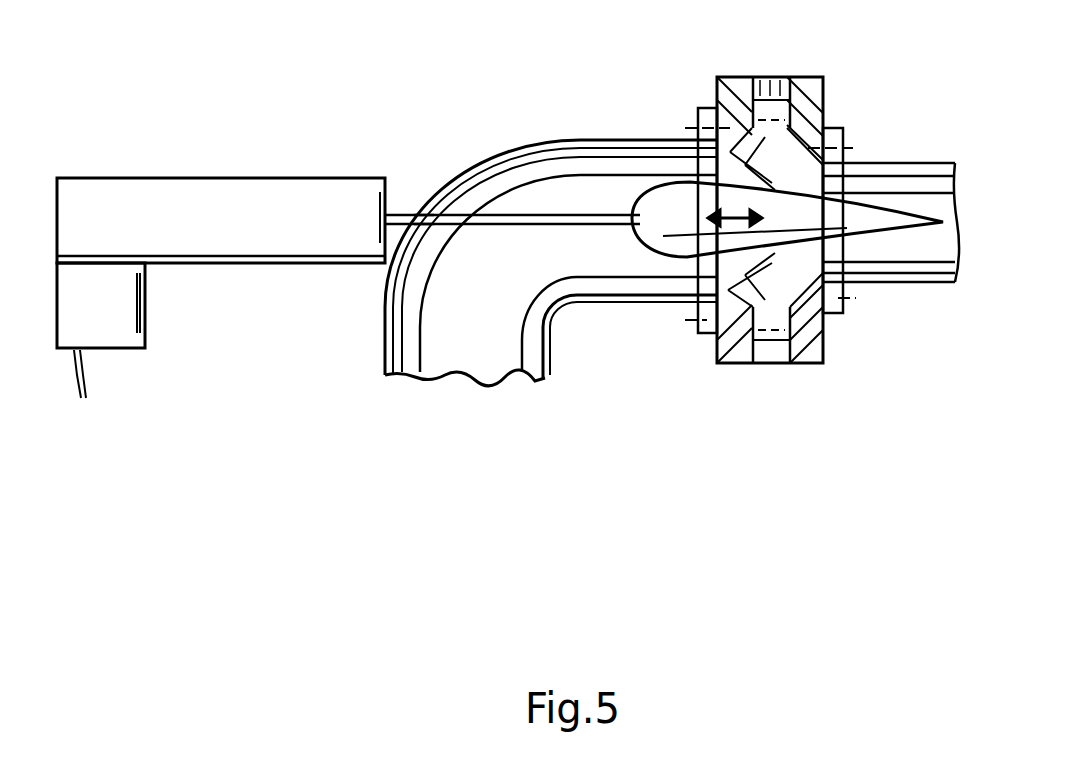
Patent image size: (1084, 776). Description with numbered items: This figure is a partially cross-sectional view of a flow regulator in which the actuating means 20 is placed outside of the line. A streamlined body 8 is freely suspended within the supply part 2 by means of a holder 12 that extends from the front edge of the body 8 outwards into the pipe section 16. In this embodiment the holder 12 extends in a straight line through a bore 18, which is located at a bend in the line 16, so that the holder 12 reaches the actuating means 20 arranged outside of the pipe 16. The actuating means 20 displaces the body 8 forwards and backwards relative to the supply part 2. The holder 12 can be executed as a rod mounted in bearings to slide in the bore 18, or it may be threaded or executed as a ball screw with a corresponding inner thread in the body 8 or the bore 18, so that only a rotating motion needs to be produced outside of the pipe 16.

The supply part 2 is at (732, 403).
The streamlined body 8 is at (860, 230).
The holder 12 is at (507, 227).
The pipe section 16 is at (613, 105).
The bore 18 is at (424, 220).
The actuating means 20 is at (212, 367).